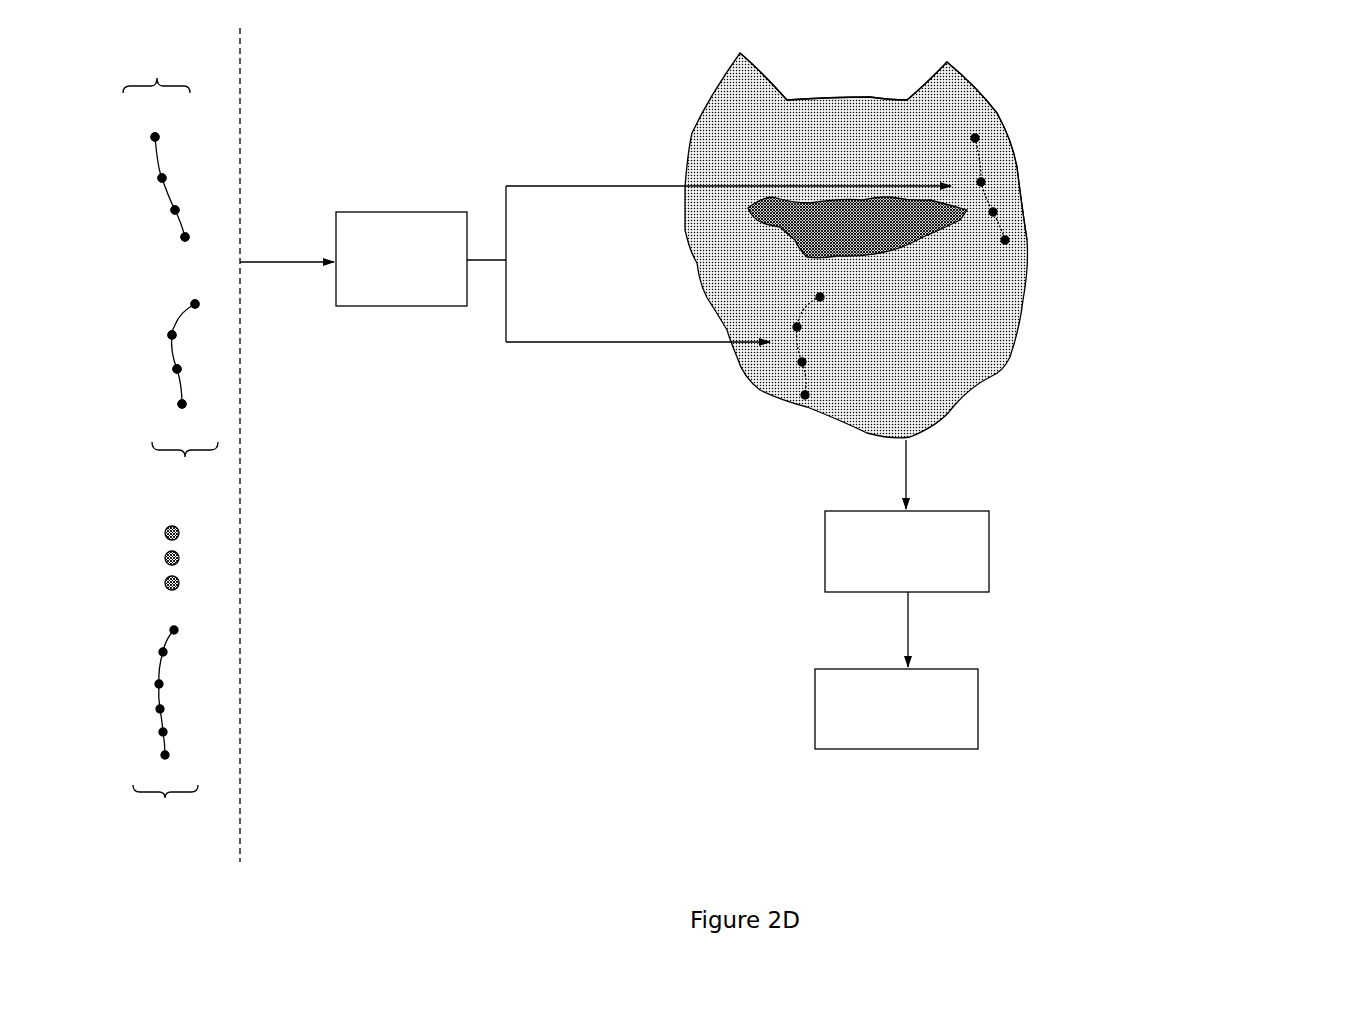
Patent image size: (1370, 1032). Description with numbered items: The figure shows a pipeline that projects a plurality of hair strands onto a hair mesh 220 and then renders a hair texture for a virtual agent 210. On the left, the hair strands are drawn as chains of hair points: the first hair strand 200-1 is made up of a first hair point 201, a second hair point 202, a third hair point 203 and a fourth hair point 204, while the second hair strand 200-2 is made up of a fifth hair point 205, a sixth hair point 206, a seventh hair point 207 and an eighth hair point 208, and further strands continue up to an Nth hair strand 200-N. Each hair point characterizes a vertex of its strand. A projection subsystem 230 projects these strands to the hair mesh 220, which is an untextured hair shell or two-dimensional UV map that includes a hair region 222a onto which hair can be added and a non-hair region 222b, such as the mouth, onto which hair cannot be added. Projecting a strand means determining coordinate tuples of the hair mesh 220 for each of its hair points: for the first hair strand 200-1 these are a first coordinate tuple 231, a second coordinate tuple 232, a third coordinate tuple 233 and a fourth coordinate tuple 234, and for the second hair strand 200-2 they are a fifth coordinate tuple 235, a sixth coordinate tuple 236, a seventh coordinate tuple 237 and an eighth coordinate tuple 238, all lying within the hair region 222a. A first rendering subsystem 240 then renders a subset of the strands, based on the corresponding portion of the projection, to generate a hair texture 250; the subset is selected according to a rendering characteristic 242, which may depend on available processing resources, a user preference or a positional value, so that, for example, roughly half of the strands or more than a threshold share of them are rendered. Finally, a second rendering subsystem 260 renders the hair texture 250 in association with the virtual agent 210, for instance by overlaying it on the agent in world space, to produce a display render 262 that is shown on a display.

The first hair strand 200-1 is at (461, 394).
The second hair strand 200-2 is at (537, 146).
The Nth hair strand 200-N is at (165, 678).
The first hair point 201 is at (157, 304).
The second hair point 202 is at (150, 335).
The third hair point 203 is at (157, 369).
The fourth hair point 204 is at (157, 404).
The fifth hair point 205 is at (127, 135).
The sixth hair point 206 is at (138, 177).
The seventh hair point 207 is at (146, 209).
The eighth hair point 208 is at (160, 236).
The virtual agent 210 is at (813, 708).
The hair mesh 220 is at (745, 75).
The hair region 222a is at (970, 72).
The non-hair region 222b is at (805, 240).
The projection subsystem 230 is at (446, 270).
The first coordinate tuple 231 is at (840, 297).
The second coordinate tuple 232 is at (828, 327).
The third coordinate tuple 233 is at (828, 362).
The fourth coordinate tuple 234 is at (828, 395).
The fifth coordinate tuple 235 is at (987, 138).
The sixth coordinate tuple 236 is at (992, 182).
The seventh coordinate tuple 237 is at (1004, 212).
The eighth coordinate tuple 238 is at (1016, 240).
The first rendering subsystem 240 is at (896, 566).
The rendering characteristic 242 is at (1265, 558).
The hair texture 250 is at (1016, 629).
The second rendering subsystem 260 is at (940, 725).
The display render 262 is at (1140, 709).